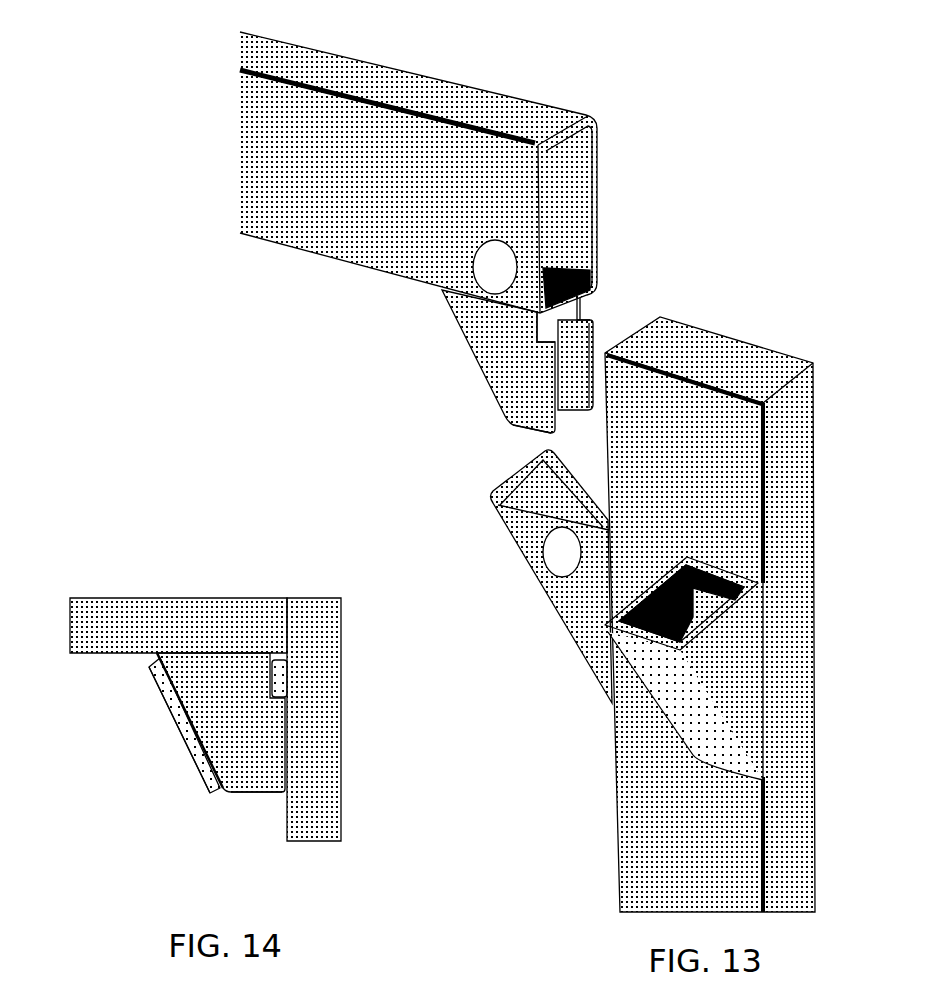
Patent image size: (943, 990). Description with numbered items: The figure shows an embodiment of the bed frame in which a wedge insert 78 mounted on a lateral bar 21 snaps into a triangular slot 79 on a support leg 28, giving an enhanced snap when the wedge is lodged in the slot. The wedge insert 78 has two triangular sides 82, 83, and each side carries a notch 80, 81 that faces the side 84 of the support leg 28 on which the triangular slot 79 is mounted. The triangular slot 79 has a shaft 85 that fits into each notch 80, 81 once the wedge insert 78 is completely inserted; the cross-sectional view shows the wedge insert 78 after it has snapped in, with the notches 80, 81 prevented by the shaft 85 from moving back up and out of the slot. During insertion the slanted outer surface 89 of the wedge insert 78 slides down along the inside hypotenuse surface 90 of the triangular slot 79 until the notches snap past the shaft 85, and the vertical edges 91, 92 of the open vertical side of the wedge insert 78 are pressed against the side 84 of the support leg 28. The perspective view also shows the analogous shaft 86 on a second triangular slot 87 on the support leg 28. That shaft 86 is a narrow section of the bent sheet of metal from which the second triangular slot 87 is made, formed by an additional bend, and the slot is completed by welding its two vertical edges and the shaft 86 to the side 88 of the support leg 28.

In FIG. 13, the lateral bar 21 is at (448, 176).
In FIG. 14, the lateral bar 21 is at (198, 598).
In FIG. 13, the support leg 28 is at (661, 602).
In FIG. 14, the support leg 28 is at (316, 598).
In FIG. 13, the wedge insert 78 is at (560, 362).
In FIG. 14, the wedge insert 78 is at (221, 756).
In FIG. 13, the triangular slot 79 is at (518, 576).
In FIG. 14, the triangular slot 79 is at (147, 737).
In FIG. 13, the notch 80 is at (617, 290).
In FIG. 13, the notch 81 is at (552, 329).
In FIG. 13, the triangular side 82 is at (575, 365).
In FIG. 13, the triangular side 83 is at (498, 361).
In FIG. 14, the side of support leg 84 is at (284, 801).
In FIG. 14, the shaft 85 is at (288, 682).
In FIG. 13, the shaft 86 is at (723, 566).
In FIG. 13, the second triangular slot 87 is at (603, 636).
In FIG. 13, the side of support leg 88 is at (710, 614).
In FIG. 14, the slanted outer surface 89 is at (150, 661).
In FIG. 13, the inside hypotenuse surface 90 is at (487, 545).
In FIG. 14, the inside hypotenuse surface 90 is at (181, 694).
In FIG. 13, the vertical edge 91 is at (593, 332).
In FIG. 13, the vertical edge 92 is at (557, 415).